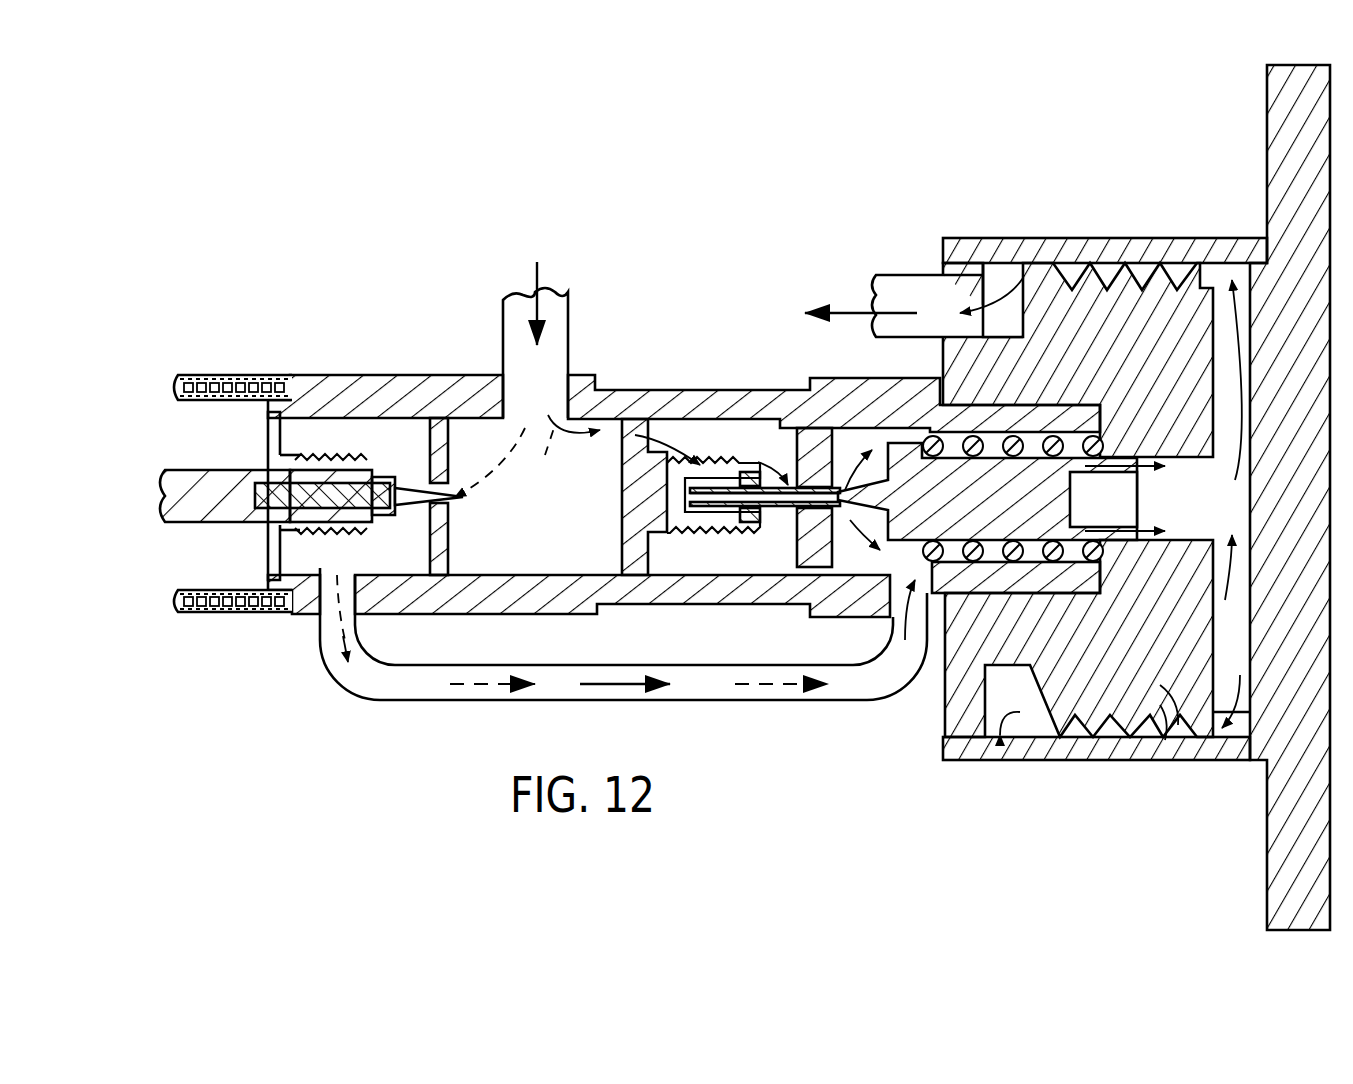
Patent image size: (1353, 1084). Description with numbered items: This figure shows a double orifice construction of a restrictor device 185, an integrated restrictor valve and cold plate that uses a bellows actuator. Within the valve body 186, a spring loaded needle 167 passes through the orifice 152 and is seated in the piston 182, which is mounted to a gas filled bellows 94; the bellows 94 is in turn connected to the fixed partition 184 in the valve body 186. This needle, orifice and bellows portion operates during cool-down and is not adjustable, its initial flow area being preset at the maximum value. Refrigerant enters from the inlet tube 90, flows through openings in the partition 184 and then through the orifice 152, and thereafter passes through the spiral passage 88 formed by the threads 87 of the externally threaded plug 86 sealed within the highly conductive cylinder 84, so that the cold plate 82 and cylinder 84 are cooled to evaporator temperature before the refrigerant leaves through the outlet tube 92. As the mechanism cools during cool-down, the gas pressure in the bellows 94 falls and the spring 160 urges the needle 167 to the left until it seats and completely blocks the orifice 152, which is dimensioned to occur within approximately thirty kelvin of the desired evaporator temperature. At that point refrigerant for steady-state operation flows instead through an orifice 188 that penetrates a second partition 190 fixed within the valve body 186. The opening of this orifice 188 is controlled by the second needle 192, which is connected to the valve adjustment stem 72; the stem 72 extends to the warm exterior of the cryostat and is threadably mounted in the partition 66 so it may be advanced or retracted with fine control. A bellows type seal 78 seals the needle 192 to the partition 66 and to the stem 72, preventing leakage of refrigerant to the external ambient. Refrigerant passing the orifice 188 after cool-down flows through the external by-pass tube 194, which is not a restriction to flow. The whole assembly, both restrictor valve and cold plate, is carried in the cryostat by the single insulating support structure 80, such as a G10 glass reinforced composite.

The partition 66 is at (275, 431).
The valve adjustment stem 72 is at (216, 506).
The bellows type seal 78 is at (330, 456).
The insulating support structure 80 is at (222, 612).
The cold plate 82 is at (1275, 176).
The highly conductive cylinder 84 is at (1050, 250).
The externally threaded plug 86 is at (1185, 716).
The threads 87 is at (1160, 716).
The spiral passage 88 is at (1085, 737).
The inlet tube 90 is at (560, 332).
The outlet tube 92 is at (900, 296).
The gas filled bellows 94 is at (700, 522).
The orifice 152 is at (792, 512).
The spring 160 is at (930, 440).
The spring loaded needle 167 is at (862, 576).
The piston 182 is at (805, 470).
The fixed partition 184 is at (640, 437).
The restrictor device 185 is at (720, 158).
The valve body 186 is at (545, 605).
The orifice 188 is at (450, 496).
The second partition 190 is at (455, 575).
The second needle 192 is at (412, 470).
The external by-pass tube 194 is at (742, 701).